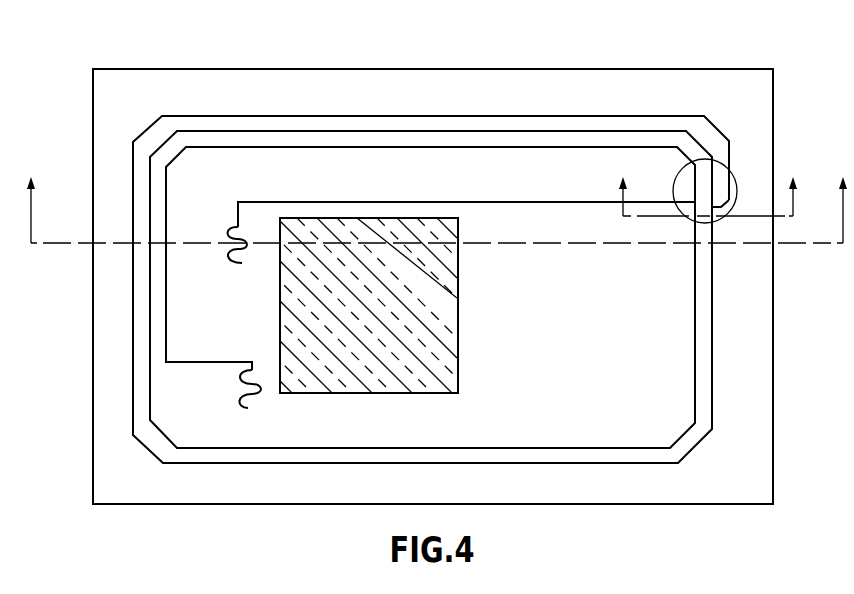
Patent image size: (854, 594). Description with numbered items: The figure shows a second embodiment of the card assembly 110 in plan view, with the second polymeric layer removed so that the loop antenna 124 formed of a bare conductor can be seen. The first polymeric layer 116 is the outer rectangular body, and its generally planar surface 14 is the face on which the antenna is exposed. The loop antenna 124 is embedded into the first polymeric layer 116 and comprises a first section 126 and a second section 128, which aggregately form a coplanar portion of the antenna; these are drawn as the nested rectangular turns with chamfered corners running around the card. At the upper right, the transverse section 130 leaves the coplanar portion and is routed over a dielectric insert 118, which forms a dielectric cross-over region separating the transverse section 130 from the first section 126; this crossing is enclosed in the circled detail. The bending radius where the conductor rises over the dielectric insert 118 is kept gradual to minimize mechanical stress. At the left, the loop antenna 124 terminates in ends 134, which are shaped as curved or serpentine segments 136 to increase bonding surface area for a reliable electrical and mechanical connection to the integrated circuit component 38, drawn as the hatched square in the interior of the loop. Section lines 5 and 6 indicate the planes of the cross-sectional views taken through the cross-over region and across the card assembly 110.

The card assembly 110 is at (443, 36).
The planar surface 14 is at (455, 286).
The first polymeric layer 116 is at (750, 338).
The dielectric insert 118 is at (723, 163).
The loop antenna 124 is at (475, 266).
The first section 126 is at (677, 131).
The second section 128 is at (475, 288).
The transverse section 130 is at (706, 212).
The ends 134 is at (223, 326).
The serpentine segments 136 is at (229, 253).
The integrated circuit component 38 is at (452, 311).
The section line 5- 5 is at (708, 184).
The section line 6- 6 is at (437, 198).